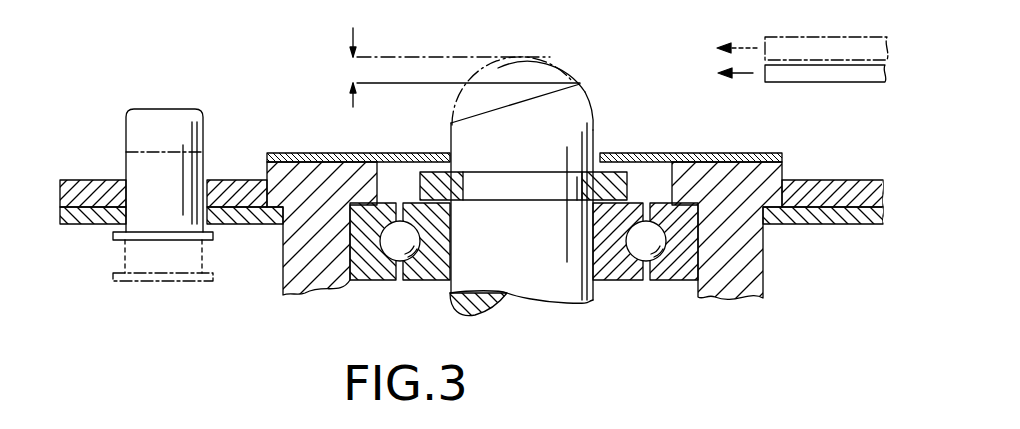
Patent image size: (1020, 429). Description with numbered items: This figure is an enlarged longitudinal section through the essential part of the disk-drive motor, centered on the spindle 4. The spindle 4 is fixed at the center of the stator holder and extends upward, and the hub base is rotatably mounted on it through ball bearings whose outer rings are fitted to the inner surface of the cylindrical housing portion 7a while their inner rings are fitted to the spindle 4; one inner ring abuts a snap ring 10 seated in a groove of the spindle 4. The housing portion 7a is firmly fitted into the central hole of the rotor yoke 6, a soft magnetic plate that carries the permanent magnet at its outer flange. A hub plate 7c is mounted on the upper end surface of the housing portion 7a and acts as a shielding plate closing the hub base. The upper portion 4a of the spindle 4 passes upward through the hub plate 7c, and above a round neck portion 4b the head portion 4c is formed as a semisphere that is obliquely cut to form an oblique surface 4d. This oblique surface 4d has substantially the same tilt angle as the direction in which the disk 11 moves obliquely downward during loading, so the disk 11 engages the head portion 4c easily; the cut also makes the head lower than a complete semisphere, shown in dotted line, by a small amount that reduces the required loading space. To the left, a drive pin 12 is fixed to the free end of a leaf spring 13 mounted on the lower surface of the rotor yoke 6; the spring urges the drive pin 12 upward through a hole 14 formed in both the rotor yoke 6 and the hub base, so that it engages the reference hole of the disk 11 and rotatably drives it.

The spindle 4 is at (568, 294).
The upper portion of the spindle 4a is at (593, 108).
The round neck portion 4b is at (598, 148).
The head portion 4c is at (586, 87).
The oblique surface 4d is at (487, 110).
The rotor yoke 6 is at (820, 218).
The cylindrical housing portion 7a is at (293, 172).
The hub plate 7c is at (332, 153).
The snap ring 10 is at (422, 172).
The disk 11 is at (838, 78).
The drive pin 12 is at (153, 109).
The leaf spring 13 is at (113, 241).
The hole 14 is at (126, 180).